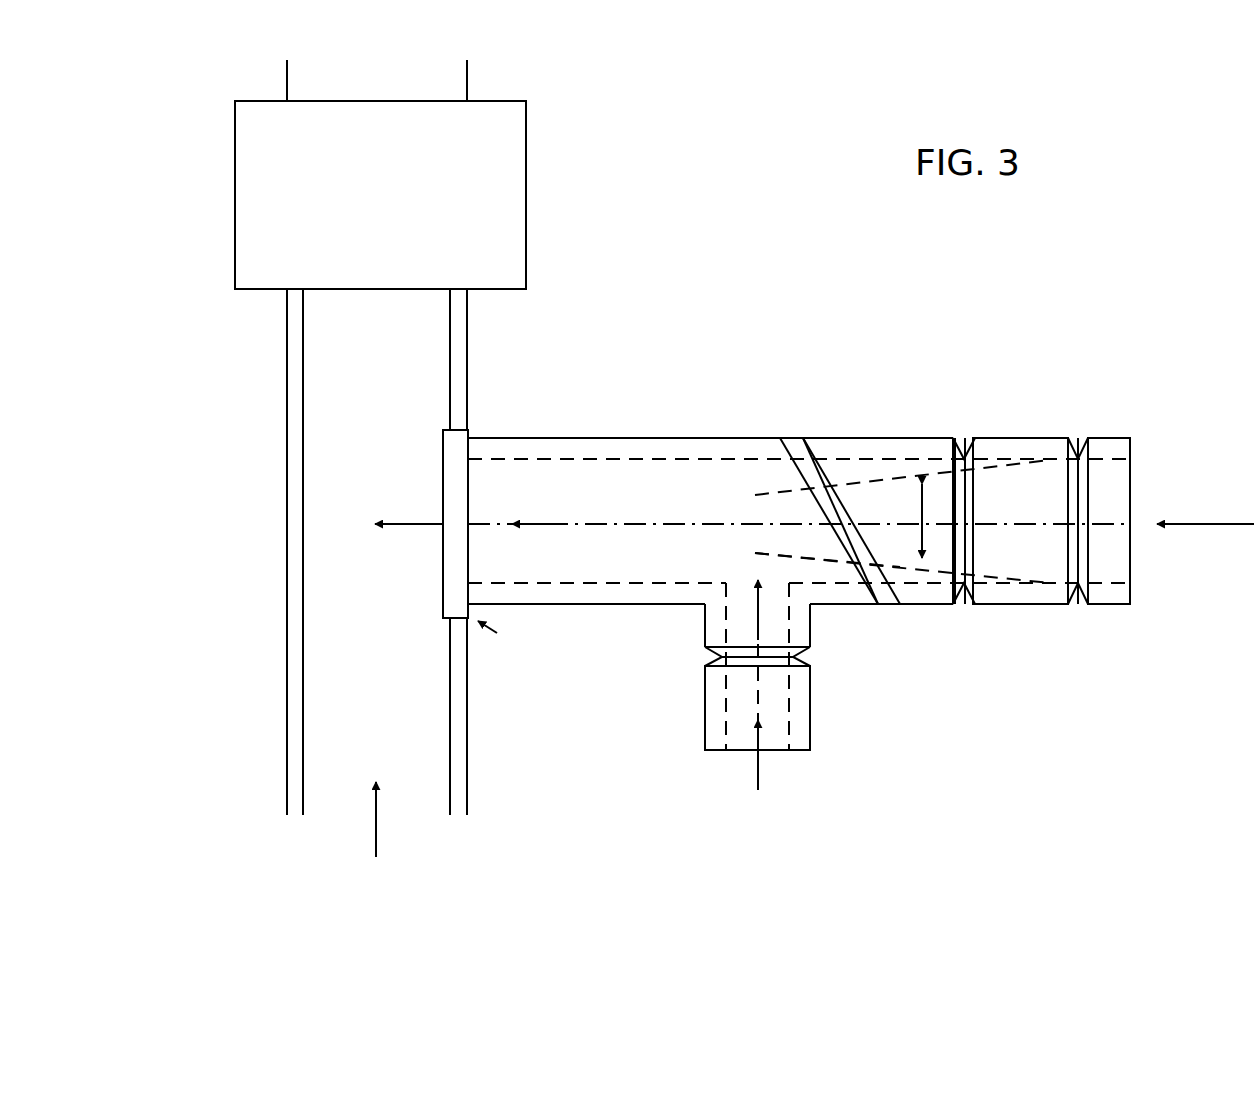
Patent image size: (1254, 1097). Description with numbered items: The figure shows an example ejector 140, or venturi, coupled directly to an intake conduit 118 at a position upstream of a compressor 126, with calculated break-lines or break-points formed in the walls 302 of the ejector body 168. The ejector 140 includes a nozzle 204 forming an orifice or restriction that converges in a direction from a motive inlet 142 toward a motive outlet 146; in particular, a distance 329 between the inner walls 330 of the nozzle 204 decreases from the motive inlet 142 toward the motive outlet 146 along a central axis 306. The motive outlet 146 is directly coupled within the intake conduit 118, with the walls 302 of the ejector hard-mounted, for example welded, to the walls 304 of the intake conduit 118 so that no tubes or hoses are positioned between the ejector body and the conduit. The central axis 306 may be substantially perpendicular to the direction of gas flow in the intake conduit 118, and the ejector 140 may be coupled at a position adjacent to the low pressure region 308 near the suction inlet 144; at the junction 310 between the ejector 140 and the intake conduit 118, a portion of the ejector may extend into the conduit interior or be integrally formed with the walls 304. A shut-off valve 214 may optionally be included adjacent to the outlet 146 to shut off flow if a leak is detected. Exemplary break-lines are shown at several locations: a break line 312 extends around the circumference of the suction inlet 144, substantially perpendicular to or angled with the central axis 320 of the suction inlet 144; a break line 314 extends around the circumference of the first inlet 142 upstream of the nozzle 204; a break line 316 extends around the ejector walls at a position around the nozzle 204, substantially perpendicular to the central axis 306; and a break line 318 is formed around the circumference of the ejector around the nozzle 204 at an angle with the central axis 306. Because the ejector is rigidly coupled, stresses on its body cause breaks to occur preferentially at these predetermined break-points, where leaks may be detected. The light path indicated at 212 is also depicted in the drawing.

The compressor 126 is at (380, 174).
The intake conduit 118 is at (287, 348).
The motive outlet 146 is at (510, 485).
The shut-off valve 214 is at (450, 430).
The ejector 140 is at (685, 352).
The nozzle 204 is at (902, 513).
The low pressure region 308 is at (743, 512).
The break line 318 is at (800, 438).
The inner walls 330 is at (874, 480).
The ejector body 168 is at (1020, 438).
The motive inlet 142 is at (1098, 438).
The reflected light path 212 is at (790, 530).
The distance 329 is at (926, 500).
The junction 310 is at (505, 636).
The central axis 306 is at (617, 525).
The walls of intake conduit 304 is at (455, 661).
The central axis of suction inlet 320 is at (757, 618).
The suction inlet 144 is at (705, 693).
The break line 312 is at (795, 658).
The break line 316 is at (964, 604).
The break line 314 is at (1080, 604).
The walls of ejector 302 is at (1028, 590).